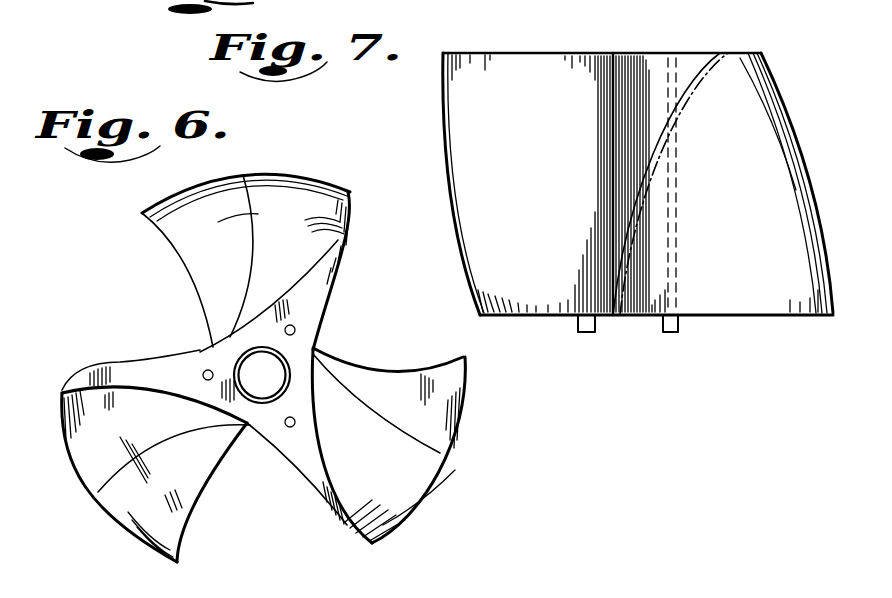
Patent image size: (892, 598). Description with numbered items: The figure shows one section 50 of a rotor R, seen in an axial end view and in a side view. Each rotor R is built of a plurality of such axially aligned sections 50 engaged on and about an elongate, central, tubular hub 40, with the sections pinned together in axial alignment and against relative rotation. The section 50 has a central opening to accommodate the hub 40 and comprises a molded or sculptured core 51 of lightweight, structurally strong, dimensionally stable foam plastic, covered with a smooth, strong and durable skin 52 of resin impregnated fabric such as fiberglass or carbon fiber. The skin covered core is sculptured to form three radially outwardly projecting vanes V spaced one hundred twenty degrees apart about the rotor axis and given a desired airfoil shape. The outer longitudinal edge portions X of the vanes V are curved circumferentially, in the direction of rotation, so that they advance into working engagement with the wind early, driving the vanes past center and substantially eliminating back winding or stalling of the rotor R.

In FIG. 6, the tubular hub 40 is at (262, 404).
In FIG. 7, the tubular hub 40 is at (677, 235).
In FIG. 6, the section 50 is at (447, 391).
In FIG. 7, the section 50 is at (443, 128).
In FIG. 6, the core 51 is at (298, 342).
In FIG. 6, the skin 52 is at (203, 470).
In FIG. 7, the skin 52 is at (717, 298).
In FIG. 6, the outer longitudinal edge portion X is at (146, 216).
In FIG. 7, the outer longitudinal edge portion X is at (770, 50).
In FIG. 6, the rotor R is at (192, 350).
In FIG. 7, the rotor R is at (665, 49).
In FIG. 6, the vane V is at (136, 429).
In FIG. 7, the vane V is at (522, 48).